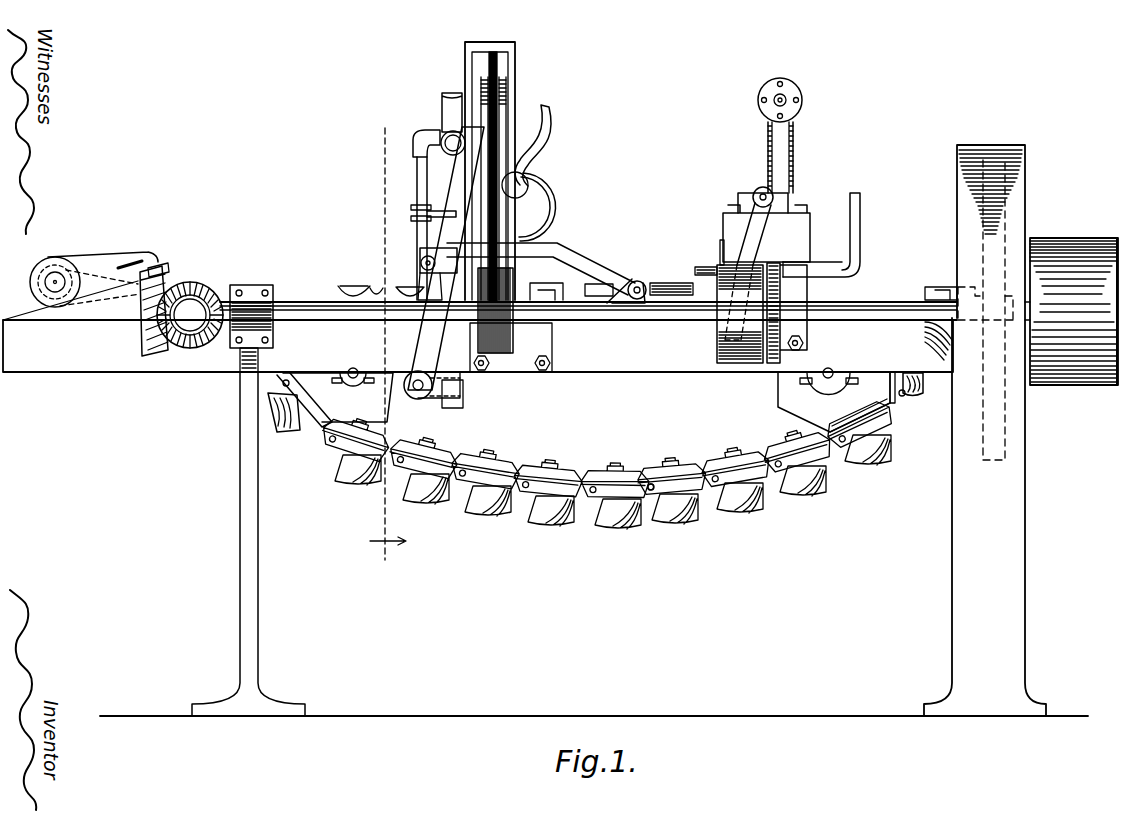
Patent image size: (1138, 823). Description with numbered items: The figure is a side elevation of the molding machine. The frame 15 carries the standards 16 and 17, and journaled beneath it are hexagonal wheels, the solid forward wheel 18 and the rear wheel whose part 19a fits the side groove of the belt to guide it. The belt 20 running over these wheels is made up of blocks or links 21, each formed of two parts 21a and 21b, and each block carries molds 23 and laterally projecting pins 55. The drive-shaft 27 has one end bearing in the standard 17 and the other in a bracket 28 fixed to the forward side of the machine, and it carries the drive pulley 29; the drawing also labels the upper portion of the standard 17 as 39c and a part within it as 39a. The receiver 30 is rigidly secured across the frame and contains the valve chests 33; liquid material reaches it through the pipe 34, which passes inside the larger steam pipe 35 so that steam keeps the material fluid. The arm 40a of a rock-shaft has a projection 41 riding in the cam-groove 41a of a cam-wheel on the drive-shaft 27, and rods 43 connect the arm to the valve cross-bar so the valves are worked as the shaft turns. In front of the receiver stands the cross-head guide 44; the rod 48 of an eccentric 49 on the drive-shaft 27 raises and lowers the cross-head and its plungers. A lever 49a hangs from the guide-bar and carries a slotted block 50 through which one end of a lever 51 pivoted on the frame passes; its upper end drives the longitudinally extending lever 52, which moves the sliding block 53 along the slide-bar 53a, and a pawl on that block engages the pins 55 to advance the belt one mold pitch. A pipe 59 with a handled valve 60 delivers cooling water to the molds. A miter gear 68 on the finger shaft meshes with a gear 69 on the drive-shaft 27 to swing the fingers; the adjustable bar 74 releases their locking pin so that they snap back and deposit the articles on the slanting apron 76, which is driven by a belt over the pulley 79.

The frame 15 is at (478, 326).
The standard 16 is at (240, 437).
The standard 17 is at (998, 430).
The hexagonal wheel 18 is at (330, 400).
The rear wheel part 19a is at (836, 400).
The belt 20 is at (524, 468).
The blocks or links 21 is at (687, 466).
The block part 21a is at (597, 491).
The block part 21b is at (588, 498).
The molds 23 is at (601, 510).
The drive-shaft 27 is at (888, 320).
The brackets 28 is at (250, 290).
The drive pulley 29 is at (1071, 311).
The receiver 30 is at (800, 222).
The valve chests 33 is at (360, 286).
The pipe 34 is at (786, 101).
The steam pipe 35 is at (793, 90).
The shaft 39a is at (1005, 443).
The sleeve 39c is at (1015, 196).
The arm 40a is at (748, 233).
The projection 41 is at (388, 344).
The cam-groove 41a is at (773, 362).
The rods 43 is at (817, 258).
The cross-head guide 44 is at (470, 88).
The rod 48 is at (488, 222).
The eccentric 49 is at (514, 344).
The lever 49a is at (470, 193).
The slotted block 50 is at (464, 390).
The levers 51 is at (416, 348).
The longitudinally extending lever 52 is at (575, 250).
The sliding block 53 is at (618, 286).
The slide-bar 53a is at (692, 300).
The laterally projecting pins 55 is at (906, 396).
The pipe 59 is at (420, 244).
The valve 60 is at (412, 214).
The miter gear 68 is at (198, 278).
The gear 69 is at (140, 300).
The adjustable bar 74 is at (162, 266).
The apron 76 is at (120, 258).
The pulley 79 is at (52, 257).